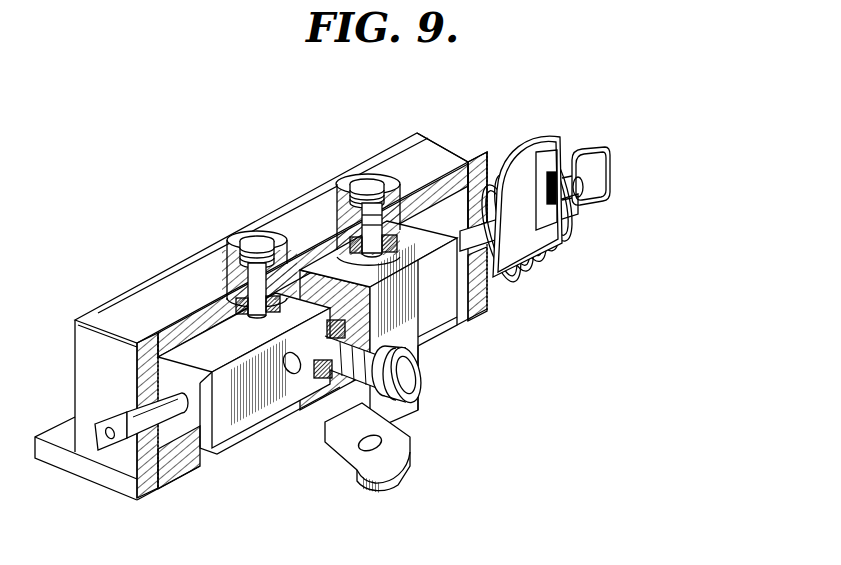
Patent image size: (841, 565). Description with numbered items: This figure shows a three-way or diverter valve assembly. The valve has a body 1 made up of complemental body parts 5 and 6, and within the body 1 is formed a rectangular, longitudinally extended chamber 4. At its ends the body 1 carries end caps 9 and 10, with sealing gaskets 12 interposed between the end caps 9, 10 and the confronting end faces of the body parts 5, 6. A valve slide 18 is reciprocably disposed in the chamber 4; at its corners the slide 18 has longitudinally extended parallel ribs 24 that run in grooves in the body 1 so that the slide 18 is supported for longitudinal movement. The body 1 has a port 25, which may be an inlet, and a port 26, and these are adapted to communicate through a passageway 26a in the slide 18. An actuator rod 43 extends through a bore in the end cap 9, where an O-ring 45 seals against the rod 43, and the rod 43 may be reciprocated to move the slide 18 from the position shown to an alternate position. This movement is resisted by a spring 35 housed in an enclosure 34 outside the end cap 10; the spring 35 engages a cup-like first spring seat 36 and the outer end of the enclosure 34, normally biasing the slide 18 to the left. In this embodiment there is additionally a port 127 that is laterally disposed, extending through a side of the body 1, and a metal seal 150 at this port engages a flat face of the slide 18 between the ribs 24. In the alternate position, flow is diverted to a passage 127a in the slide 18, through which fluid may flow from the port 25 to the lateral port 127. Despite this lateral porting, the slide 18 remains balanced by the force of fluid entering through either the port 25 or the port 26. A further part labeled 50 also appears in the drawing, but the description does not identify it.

The body 1 is at (160, 236).
The chamber 4 is at (452, 217).
The body part 5 is at (172, 465).
The body part 6 is at (217, 300).
The end cap 9 is at (150, 333).
The end cap 10 is at (433, 150).
The sealing gaskets 12 is at (152, 493).
The valve slide 18 is at (249, 460).
The ribs 24 is at (243, 363).
The port 25 is at (262, 239).
The port 26 is at (374, 188).
The passageway 26a is at (349, 230).
The enclosure 34 is at (540, 147).
The spring 35 is at (540, 252).
The first spring seat 36 is at (495, 267).
The actuator rod 43 is at (133, 412).
The O-ring 45 is at (140, 472).
The nut 50 is at (400, 203).
The port 127 is at (414, 372).
The passage 127a is at (298, 372).
The metal seal 150 is at (366, 333).